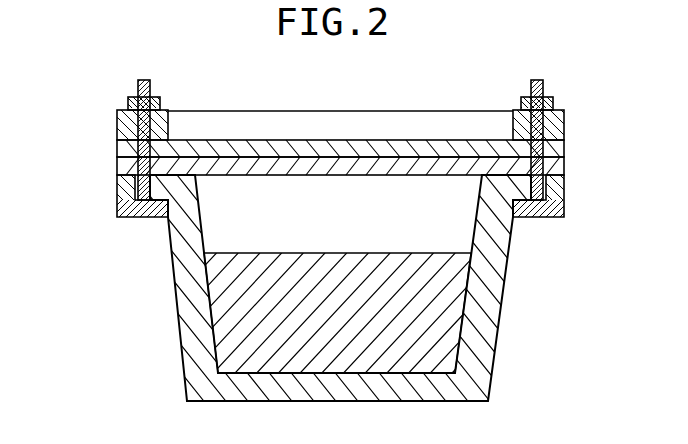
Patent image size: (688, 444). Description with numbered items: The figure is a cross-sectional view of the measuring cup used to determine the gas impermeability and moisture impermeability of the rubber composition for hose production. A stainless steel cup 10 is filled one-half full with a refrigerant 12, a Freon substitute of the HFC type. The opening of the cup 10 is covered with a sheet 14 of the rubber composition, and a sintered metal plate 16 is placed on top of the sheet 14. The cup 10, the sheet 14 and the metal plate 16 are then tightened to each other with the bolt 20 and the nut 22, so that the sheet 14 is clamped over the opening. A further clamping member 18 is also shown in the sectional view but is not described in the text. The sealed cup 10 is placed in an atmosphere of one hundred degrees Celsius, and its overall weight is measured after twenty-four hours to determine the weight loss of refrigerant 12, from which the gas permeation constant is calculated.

The stainless steel cup 10 is at (484, 278).
The refrigerant 12 is at (442, 333).
The sheet 14 is at (118, 164).
The sintered metal plate 16 is at (118, 147).
The upper clamp ring 18 is at (117, 120).
The bolt 20 is at (120, 207).
The nut 22 is at (125, 99).